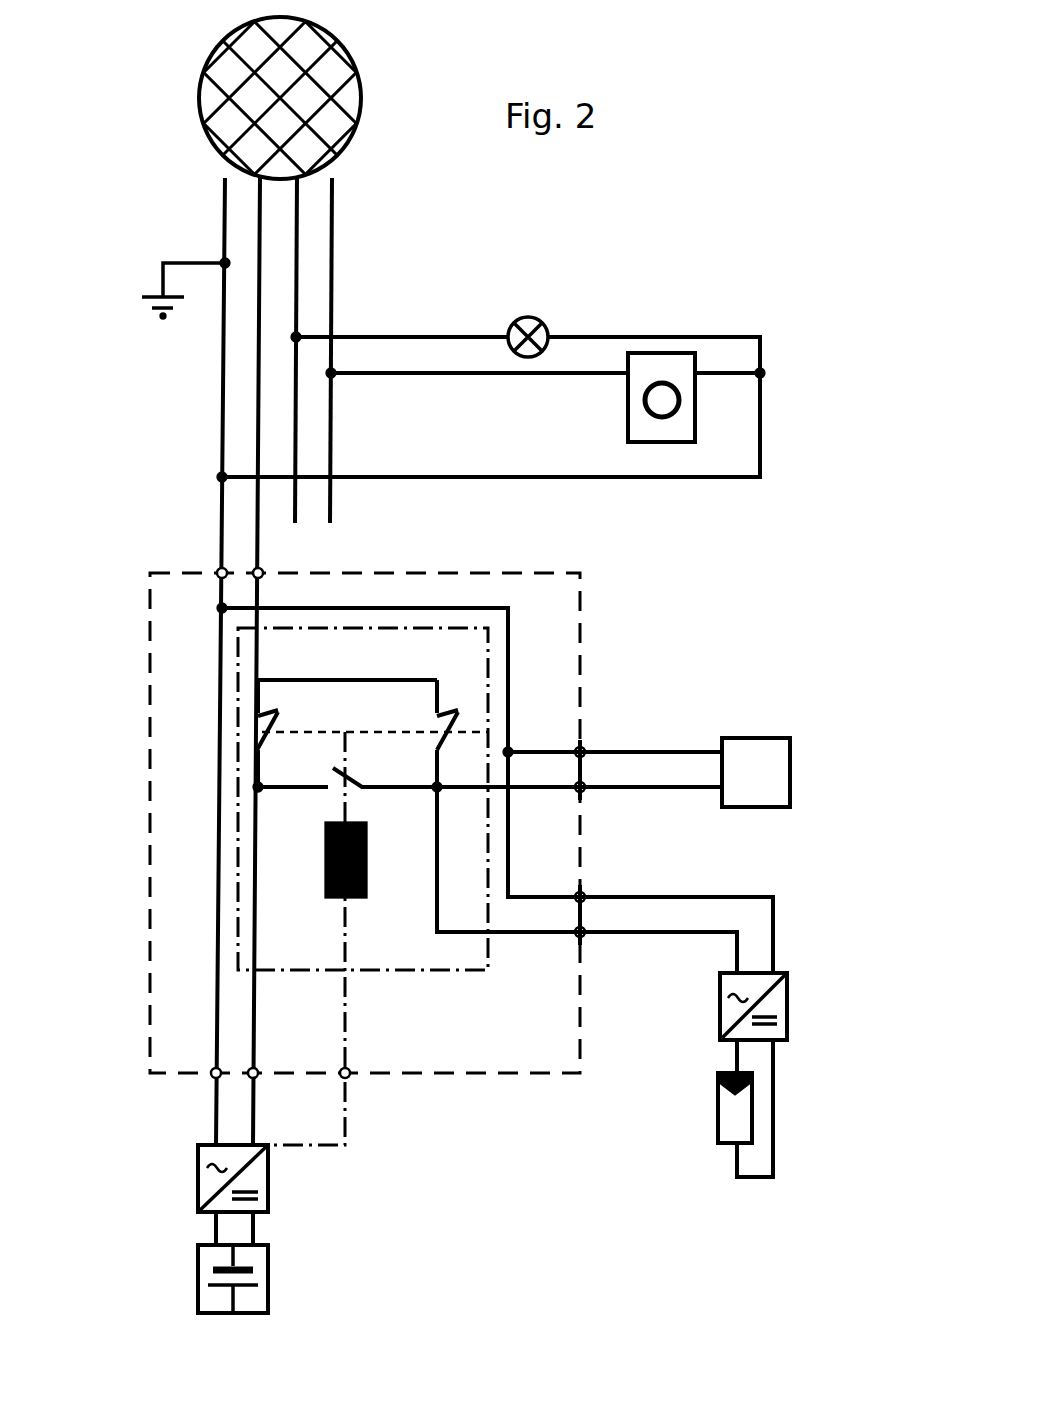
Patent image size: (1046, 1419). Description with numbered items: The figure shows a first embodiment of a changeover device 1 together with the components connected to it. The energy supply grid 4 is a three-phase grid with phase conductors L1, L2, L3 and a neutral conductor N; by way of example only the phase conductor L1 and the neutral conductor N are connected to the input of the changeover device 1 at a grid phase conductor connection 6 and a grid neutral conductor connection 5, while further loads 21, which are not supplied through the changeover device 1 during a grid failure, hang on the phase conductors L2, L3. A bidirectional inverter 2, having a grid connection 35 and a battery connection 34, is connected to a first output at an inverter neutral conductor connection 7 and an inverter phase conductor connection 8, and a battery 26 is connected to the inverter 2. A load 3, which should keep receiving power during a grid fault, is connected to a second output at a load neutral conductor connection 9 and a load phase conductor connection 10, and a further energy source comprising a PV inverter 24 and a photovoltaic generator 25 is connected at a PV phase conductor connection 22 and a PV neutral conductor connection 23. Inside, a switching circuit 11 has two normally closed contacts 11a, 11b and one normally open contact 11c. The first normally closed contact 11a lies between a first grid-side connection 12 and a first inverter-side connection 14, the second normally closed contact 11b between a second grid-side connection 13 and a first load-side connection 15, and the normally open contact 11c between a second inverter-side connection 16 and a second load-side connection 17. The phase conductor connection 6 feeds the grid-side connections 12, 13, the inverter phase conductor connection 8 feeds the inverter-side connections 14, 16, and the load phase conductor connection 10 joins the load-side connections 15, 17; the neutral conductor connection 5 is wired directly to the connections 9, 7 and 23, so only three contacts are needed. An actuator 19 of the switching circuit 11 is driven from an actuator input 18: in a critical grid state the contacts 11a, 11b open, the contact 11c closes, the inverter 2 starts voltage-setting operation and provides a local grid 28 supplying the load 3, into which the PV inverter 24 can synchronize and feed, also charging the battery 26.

The changeover device 1 is at (582, 586).
The bidirectional inverter 2 is at (280, 1178).
The load 3 is at (798, 775).
The energy supply grid 4 is at (364, 62).
The grid neutral conductor connection 5 is at (216, 566).
The grid phase conductor connection 6 is at (268, 566).
The inverter neutral conductor connection 7 is at (208, 1080).
The inverter phase conductor connection 8 is at (268, 1082).
The load neutral conductor connection 9 is at (590, 747).
The load phase conductor connection 10 is at (590, 795).
The switching circuit 11 is at (488, 978).
The first normally closed contact 11a is at (257, 730).
The second normally closed contact 11b is at (508, 735).
The normally open contact 11c is at (350, 773).
The first grid-side connection 12 is at (262, 710).
The second grid-side connection 13 is at (443, 710).
The first inverter-side connection 14 is at (263, 755).
The first load-side connection 15 is at (444, 760).
The second inverter-side connection 16 is at (318, 797).
The second load-side connection 17 is at (374, 795).
The actuator input 18 is at (352, 1081).
The actuator 19 is at (323, 885).
The further loads 21 is at (667, 353).
The PV phase conductor connection 22 is at (590, 942).
The PV neutral conductor connection 23 is at (590, 888).
The PV inverter 24 is at (792, 1005).
The photovoltaic generator 25 is at (715, 1112).
The battery 26 is at (278, 1283).
The local grid 28 is at (533, 1212).
The battery connection 34 is at (228, 1216).
The grid connection 35 is at (226, 1141).
The neutral conductor N is at (218, 228).
The phase conductor L1 is at (273, 230).
The phase conductor L2 is at (310, 277).
The phase conductor L3 is at (346, 300).